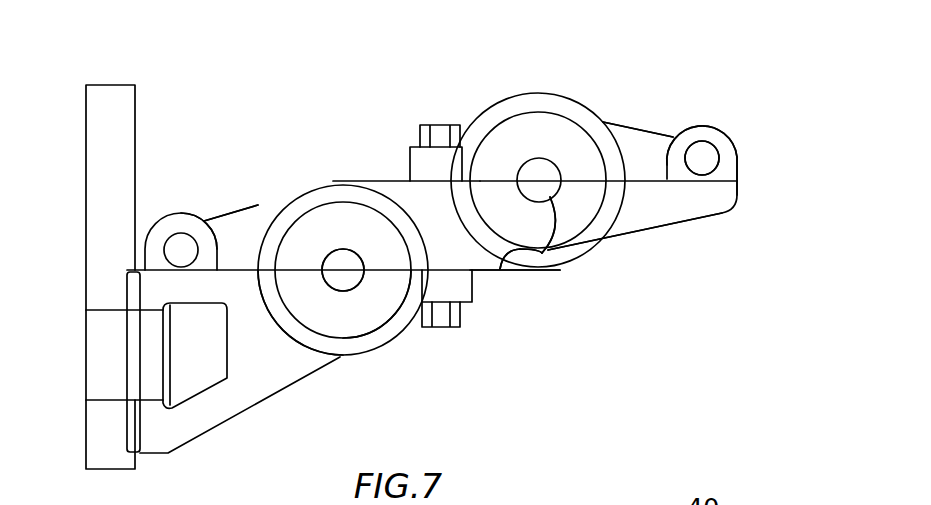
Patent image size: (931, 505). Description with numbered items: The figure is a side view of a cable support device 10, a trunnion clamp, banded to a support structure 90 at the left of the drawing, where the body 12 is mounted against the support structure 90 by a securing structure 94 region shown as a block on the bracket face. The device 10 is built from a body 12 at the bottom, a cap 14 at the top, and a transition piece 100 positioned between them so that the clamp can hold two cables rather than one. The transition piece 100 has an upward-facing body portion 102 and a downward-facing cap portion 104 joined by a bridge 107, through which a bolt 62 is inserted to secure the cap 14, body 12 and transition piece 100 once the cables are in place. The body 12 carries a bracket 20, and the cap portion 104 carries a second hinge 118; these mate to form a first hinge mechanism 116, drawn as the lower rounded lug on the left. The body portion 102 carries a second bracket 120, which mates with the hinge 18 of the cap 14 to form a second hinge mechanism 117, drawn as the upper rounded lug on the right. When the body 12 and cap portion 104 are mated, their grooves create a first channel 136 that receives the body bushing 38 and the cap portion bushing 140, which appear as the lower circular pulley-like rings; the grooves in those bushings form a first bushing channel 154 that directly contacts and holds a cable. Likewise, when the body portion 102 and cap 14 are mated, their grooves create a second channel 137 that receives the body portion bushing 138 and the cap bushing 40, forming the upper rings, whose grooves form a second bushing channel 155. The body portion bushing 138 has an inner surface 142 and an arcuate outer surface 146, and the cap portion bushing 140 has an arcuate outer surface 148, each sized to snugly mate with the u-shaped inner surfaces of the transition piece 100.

The cable support device 10 is at (258, 72).
The body 12 is at (250, 416).
The cap 14 is at (633, 103).
The hinge 18 is at (655, 127).
The bracket 20 is at (172, 214).
The body bushing 38 is at (368, 318).
The cap bushing 40 is at (512, 130).
The bolt 62 is at (442, 132).
The support structure 90 is at (100, 177).
The boss 94 is at (97, 345).
The transition piece 100 is at (519, 282).
The body portion 102 is at (557, 257).
The cap portion 104 is at (287, 203).
The bridge 107 is at (407, 187).
The first hinge mechanism 116 is at (196, 207).
The second hinge mechanism 117 is at (723, 112).
The second hinge 118 is at (248, 215).
The second bracket 120 is at (734, 129).
The first channel 136 is at (323, 342).
The second channel 137 is at (541, 260).
The body portion bushing 138 is at (598, 240).
The cap portion bushing 140 is at (337, 218).
The inner surface 142 is at (580, 212).
The outer surface 146 is at (498, 272).
The outer surface 148 is at (417, 200).
The first bushing channel 154 is at (340, 275).
The second bushing channel 155 is at (540, 172).